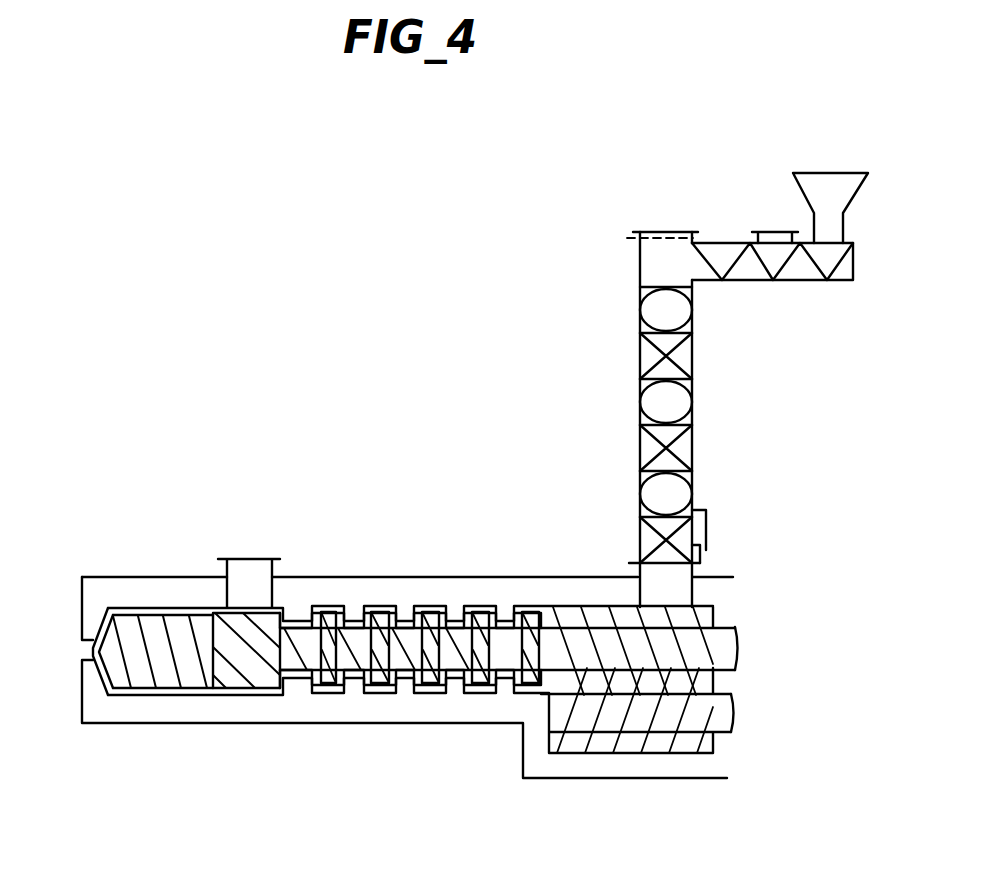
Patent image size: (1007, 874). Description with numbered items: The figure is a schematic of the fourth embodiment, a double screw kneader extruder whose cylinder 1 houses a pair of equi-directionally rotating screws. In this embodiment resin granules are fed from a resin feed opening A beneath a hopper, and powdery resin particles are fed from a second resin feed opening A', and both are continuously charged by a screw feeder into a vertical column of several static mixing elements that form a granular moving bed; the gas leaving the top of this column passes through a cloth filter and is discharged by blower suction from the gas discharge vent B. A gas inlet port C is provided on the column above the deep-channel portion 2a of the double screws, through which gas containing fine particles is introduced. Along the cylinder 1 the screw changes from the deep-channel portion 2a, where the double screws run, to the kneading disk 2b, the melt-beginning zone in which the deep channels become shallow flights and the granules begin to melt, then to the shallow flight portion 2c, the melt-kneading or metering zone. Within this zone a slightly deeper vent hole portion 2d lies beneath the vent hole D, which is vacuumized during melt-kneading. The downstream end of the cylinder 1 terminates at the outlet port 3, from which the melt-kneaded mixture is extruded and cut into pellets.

The cylinder 1 is at (352, 703).
The deep-channel portion 2a is at (642, 718).
The kneading disk 2b is at (430, 680).
The shallow flight portion 2c is at (145, 677).
The vent hole portion 2d is at (233, 678).
The outlet port 3 is at (85, 652).
The resin feed opening A is at (780, 226).
The resin feed opening A' is at (775, 223).
The gas discharge vent B is at (668, 253).
The gas inlet port C is at (690, 530).
The vent hole D is at (249, 578).